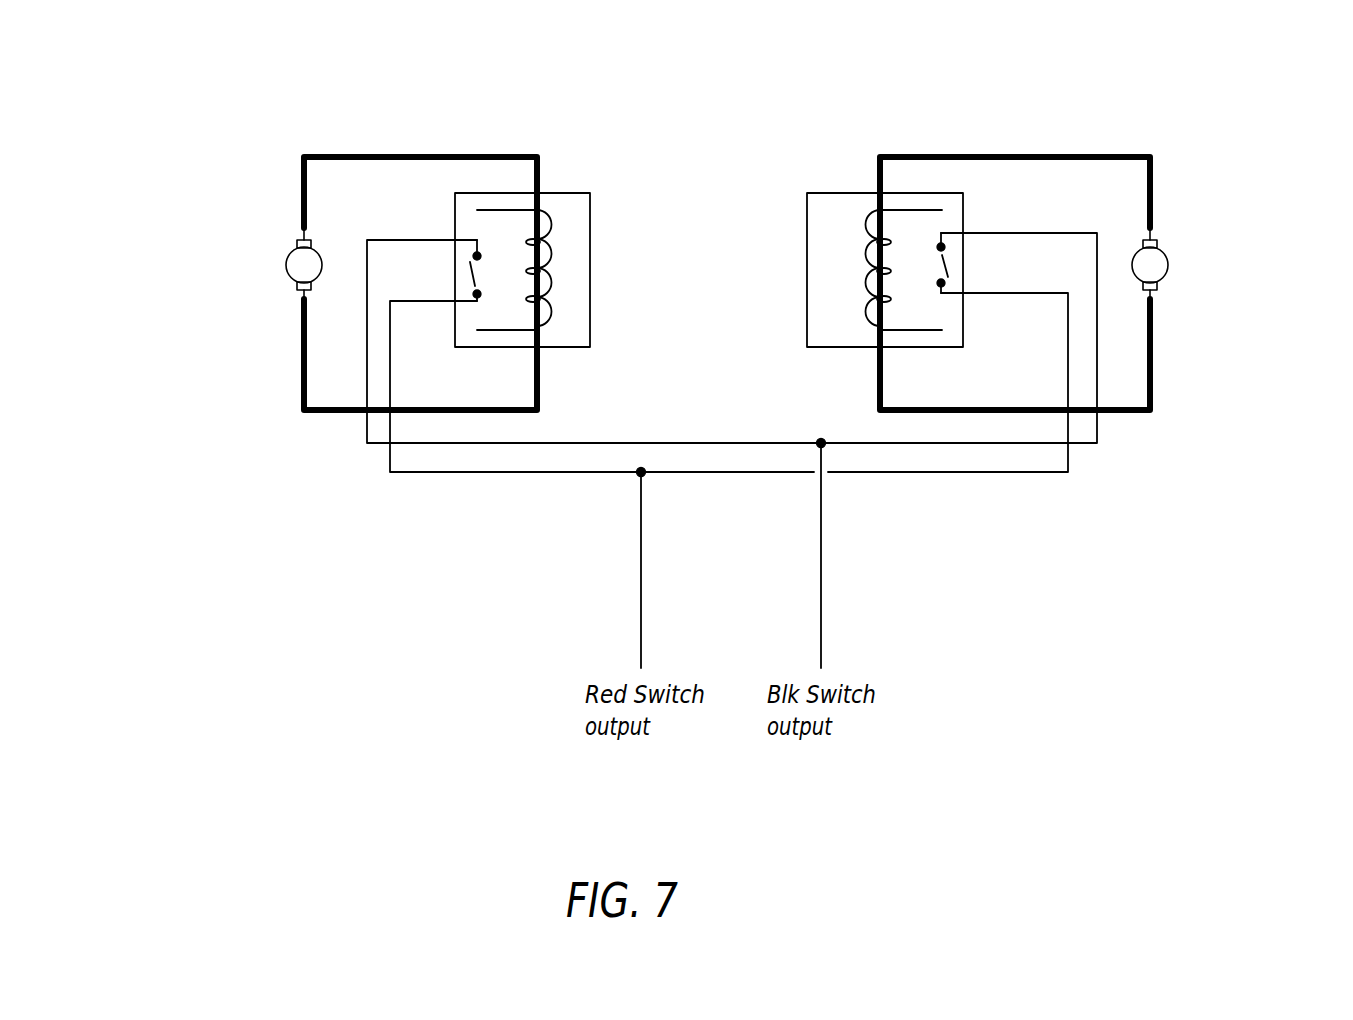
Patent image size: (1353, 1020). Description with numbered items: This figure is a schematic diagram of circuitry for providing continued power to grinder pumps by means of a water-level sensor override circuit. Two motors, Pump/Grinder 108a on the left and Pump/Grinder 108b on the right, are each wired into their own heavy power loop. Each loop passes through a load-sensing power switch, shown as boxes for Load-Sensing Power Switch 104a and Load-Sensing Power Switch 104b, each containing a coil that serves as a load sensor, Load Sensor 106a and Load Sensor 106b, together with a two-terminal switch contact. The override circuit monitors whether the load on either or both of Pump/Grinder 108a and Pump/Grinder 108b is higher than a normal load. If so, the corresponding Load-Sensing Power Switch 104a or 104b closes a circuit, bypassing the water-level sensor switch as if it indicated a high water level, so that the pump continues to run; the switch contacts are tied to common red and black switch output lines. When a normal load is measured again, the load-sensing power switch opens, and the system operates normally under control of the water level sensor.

The load-sensing power switch 104a is at (564, 193).
The load-sensing power switch 104b is at (840, 193).
The load sensor 106a is at (548, 302).
The load sensor 106b is at (863, 237).
The pump/grinder 108a is at (248, 268).
The pump/grinder 108b is at (1221, 268).